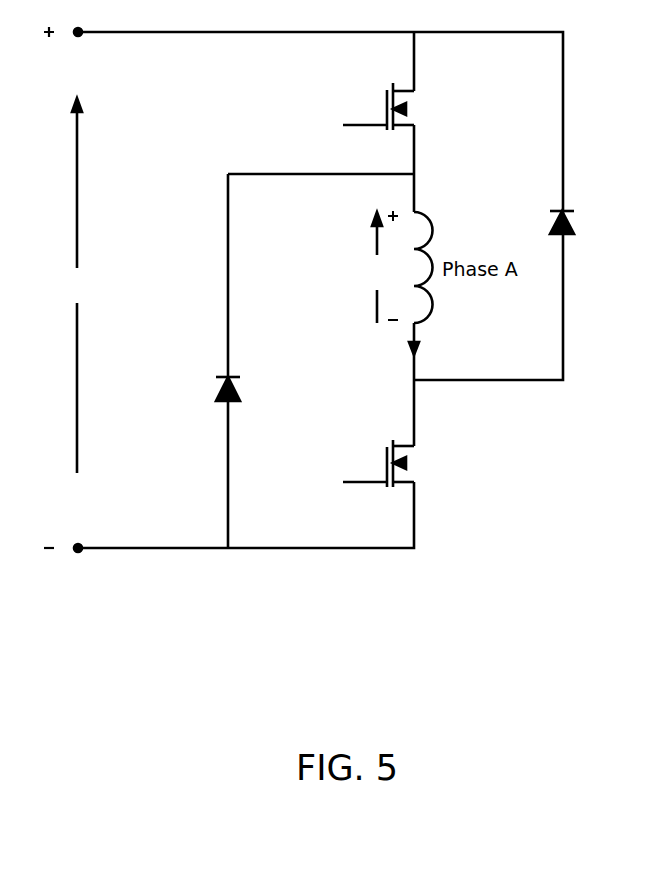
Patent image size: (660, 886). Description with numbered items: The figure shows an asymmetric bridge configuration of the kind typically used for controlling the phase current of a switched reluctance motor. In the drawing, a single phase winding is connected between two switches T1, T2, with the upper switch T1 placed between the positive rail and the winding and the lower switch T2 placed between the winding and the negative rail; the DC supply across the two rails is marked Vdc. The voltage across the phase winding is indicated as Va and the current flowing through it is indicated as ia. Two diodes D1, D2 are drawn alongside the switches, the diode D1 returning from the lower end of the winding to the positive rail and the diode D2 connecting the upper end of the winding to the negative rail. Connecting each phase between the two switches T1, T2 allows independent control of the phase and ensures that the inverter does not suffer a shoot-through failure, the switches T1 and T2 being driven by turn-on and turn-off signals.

The switch T1 is at (403, 106).
The switch T2 is at (403, 464).
The upper freewheeling diode D1 is at (586, 222).
The lower freewheeling diode D2 is at (250, 389).
The DC link voltage Vdc is at (77, 285).
The phase A voltage Va is at (382, 267).
The phase A current ia is at (434, 354).